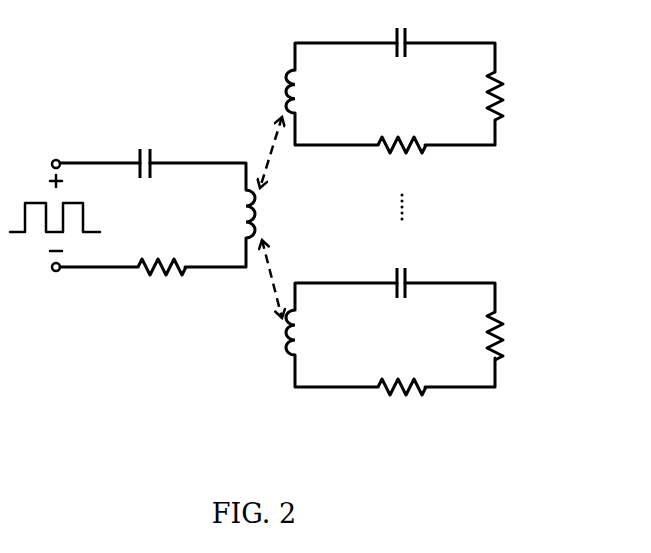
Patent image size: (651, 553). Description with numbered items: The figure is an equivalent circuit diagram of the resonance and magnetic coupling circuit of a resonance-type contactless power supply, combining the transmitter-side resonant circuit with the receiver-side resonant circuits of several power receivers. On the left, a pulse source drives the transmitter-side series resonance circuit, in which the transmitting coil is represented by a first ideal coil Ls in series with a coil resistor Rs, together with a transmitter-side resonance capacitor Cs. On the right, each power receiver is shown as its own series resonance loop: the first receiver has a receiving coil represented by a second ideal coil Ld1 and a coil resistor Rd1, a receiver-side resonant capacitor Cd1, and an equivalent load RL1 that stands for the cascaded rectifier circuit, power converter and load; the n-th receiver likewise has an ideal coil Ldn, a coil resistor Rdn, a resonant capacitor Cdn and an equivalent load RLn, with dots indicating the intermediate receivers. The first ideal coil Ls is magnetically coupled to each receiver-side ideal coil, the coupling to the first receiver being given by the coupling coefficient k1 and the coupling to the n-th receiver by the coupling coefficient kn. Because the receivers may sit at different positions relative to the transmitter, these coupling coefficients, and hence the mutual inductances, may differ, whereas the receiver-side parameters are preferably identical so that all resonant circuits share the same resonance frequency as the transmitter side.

The transmitter-side resonance capacitor Cs is at (147, 150).
The coil resistor Rs is at (162, 253).
The first ideal coil Ls is at (234, 214).
The coupling coefficient k1 is at (260, 152).
The coupling coefficient kn is at (260, 279).
The receiver-side resonant capacitor Cd1 is at (408, 29).
The second ideal coil Ld1 is at (315, 91).
The coil resistor Rd1 is at (402, 131).
The load RL1 is at (524, 96).
The receiver-side resonant capacitor Cdn is at (408, 269).
The second ideal coil Ldn is at (315, 332).
The coil resistor Rdn is at (402, 372).
The load RLn is at (524, 336).